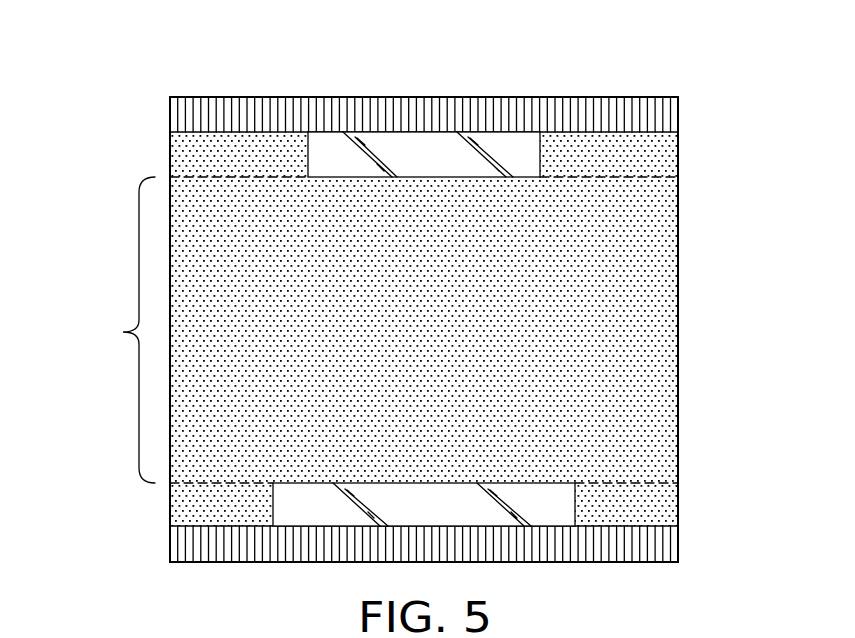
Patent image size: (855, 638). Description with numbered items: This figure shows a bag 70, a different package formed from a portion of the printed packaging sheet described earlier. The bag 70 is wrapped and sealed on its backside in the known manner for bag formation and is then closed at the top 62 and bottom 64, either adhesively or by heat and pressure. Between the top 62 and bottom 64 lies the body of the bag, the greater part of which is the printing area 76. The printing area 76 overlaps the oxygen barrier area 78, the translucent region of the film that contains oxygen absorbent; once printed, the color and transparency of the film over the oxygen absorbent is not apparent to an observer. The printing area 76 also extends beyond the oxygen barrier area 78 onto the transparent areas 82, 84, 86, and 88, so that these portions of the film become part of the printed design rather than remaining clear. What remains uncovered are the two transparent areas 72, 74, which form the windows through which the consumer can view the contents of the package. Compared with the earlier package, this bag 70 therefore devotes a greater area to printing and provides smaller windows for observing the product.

The bag 70 is at (133, 87).
The top seal 62 is at (607, 110).
The bottom seal 64 is at (622, 557).
The transparent area 72 is at (425, 150).
The transparent area 74 is at (547, 492).
The printing area 76 is at (645, 285).
The oxygen barrier area 78 is at (126, 330).
The transparent area 82 is at (185, 153).
The transparent area 84 is at (187, 500).
The transparent area 86 is at (655, 157).
The transparent area 88 is at (655, 508).